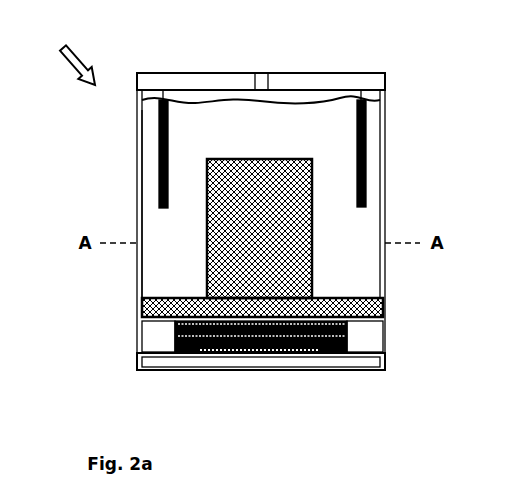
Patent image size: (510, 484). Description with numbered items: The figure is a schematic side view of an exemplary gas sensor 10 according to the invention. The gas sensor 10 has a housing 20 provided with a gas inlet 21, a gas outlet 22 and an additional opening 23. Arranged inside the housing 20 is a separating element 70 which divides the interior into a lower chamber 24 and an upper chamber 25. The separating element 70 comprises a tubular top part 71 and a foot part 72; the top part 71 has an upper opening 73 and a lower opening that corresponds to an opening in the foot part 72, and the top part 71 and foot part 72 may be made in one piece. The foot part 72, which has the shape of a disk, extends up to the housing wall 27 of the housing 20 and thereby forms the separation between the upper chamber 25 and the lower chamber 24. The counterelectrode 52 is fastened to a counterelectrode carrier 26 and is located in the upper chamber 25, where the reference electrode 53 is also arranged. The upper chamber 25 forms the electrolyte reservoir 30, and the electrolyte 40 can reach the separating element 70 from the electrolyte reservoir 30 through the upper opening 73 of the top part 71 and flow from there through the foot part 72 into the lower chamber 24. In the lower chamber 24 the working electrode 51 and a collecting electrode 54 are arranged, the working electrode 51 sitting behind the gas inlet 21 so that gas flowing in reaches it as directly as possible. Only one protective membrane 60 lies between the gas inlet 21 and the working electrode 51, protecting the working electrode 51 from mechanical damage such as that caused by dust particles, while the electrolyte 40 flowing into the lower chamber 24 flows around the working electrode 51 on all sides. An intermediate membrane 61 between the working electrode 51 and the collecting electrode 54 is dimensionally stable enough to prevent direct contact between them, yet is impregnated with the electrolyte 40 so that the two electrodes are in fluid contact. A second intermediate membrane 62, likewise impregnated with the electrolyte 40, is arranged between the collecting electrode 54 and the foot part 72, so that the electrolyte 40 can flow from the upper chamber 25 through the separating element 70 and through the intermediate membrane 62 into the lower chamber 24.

The gas sensor 10 is at (60, 60).
The housing 20 is at (137, 110).
The gas inlet 21 is at (266, 355).
The gas outlet 22 is at (265, 73).
The additional opening 23 is at (137, 128).
The lower chamber 24 is at (172, 338).
The upper chamber 25 is at (153, 266).
The counterelectrode carrier 26 is at (166, 73).
The housing wall 27 is at (385, 270).
The electrolyte reservoir 30 is at (137, 173).
The electrolyte 40 is at (162, 260).
The working electrode 51 is at (347, 348).
The counterelectrode 52 is at (158, 158).
The reference electrode 53 is at (368, 157).
The collecting electrode 54 is at (347, 332).
The protective membrane 60 is at (275, 354).
The intermediate membrane 61 is at (347, 340).
The second intermediate membrane 62 is at (347, 323).
The separating element 70 is at (197, 232).
The top part 71 is at (315, 227).
The foot part 72 is at (385, 305).
The upper opening 73 is at (262, 146).